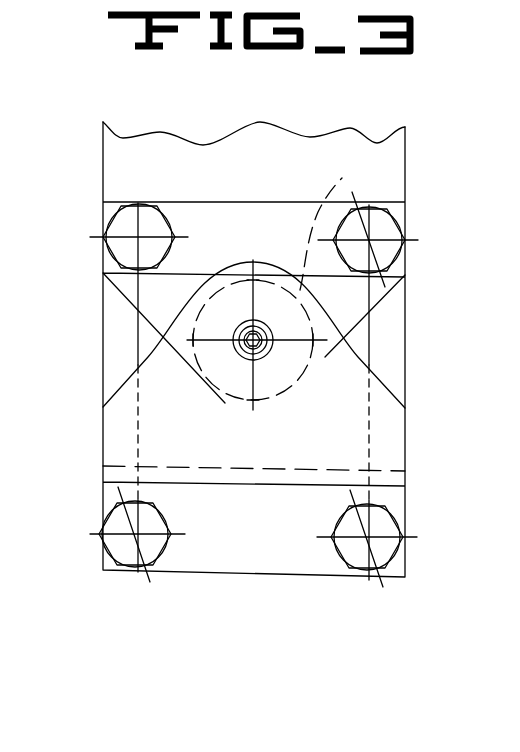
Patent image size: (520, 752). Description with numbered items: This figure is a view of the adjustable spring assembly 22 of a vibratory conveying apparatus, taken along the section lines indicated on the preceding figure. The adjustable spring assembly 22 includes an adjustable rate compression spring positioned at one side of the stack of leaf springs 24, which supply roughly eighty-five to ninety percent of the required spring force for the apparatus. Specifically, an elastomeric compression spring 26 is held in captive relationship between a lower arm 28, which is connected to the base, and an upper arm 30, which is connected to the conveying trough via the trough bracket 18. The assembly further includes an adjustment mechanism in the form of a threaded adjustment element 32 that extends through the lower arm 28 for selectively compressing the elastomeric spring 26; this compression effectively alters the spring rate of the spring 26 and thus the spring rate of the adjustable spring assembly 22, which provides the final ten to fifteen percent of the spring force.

The trough bracket 18 is at (270, 143).
The adjustable spring assembly 22 is at (88, 633).
The leaf springs 24 is at (133, 342).
The elastomeric compression spring 26 is at (327, 192).
The lower arm 28 is at (382, 385).
The upper arm 30 is at (355, 313).
The threaded adjustment element 32 is at (245, 358).